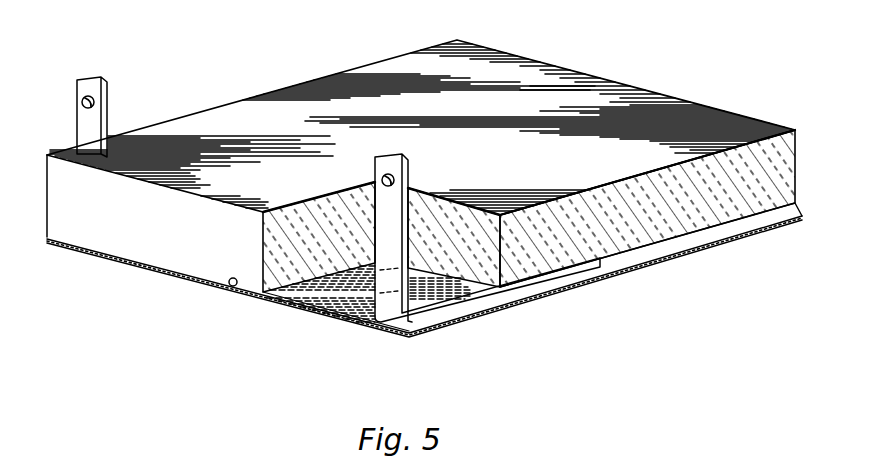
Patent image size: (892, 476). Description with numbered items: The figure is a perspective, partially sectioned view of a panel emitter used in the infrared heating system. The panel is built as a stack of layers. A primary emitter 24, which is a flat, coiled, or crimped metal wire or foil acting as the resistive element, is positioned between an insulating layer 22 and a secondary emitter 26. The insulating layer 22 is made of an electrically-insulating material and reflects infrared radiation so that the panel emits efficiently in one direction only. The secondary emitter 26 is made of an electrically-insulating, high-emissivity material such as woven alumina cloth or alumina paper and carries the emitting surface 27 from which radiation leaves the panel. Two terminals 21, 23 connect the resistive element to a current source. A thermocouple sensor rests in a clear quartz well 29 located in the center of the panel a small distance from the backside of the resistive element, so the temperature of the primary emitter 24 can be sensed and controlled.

The terminal 21 is at (95, 118).
The insulating layer 22 is at (747, 208).
The terminal 23 is at (393, 196).
The primary emitter 24 is at (518, 297).
The secondary emitter 26 is at (687, 255).
The emitting surface 27 is at (610, 274).
The clear quartz well 29 is at (228, 288).